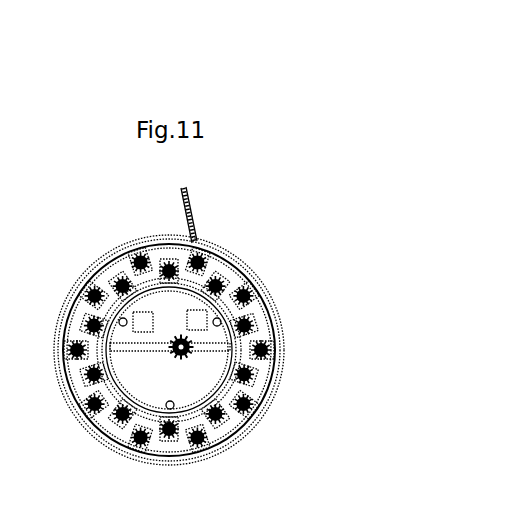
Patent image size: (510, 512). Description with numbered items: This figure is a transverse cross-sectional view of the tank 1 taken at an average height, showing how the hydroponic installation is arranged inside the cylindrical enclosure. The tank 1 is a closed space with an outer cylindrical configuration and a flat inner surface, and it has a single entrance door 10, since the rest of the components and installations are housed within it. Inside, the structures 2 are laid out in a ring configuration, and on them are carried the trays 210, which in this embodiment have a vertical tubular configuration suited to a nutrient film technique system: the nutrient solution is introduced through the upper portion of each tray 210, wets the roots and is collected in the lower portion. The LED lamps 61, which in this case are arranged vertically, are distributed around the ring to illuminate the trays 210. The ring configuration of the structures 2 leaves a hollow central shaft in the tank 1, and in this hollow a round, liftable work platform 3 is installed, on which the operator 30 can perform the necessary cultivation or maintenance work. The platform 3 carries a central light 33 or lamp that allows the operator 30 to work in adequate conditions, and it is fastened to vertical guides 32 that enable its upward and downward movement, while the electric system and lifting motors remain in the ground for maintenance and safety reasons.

The tank 1 is at (253, 241).
The structures 2 is at (264, 314).
The work platform 3 is at (206, 385).
The entrance door 10 is at (199, 202).
The operator 30 is at (192, 354).
The vertical guides 32 is at (121, 320).
The central light 33 is at (163, 344).
The LED lamps 61 is at (262, 284).
The trays 210 is at (265, 347).